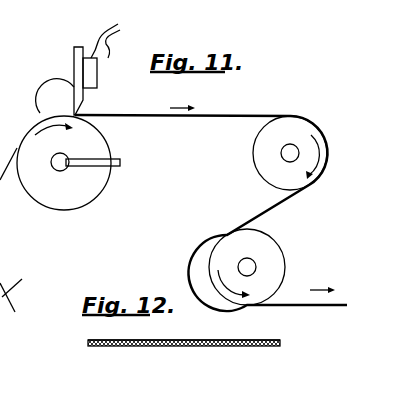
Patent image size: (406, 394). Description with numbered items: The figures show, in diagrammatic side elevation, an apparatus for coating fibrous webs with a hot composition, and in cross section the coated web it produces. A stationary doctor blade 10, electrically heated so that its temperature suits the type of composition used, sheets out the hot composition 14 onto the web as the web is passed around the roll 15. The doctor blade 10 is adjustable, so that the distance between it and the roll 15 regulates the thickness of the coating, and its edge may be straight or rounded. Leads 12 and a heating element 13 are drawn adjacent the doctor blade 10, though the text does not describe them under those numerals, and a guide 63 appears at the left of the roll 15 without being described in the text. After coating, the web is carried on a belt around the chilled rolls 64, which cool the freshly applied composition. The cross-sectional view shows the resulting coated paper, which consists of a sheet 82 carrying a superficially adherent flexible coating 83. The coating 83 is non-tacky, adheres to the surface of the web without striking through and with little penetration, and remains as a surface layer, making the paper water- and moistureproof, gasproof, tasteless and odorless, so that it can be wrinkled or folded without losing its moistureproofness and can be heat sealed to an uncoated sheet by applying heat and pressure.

In FIG. 11, the doctor blade 10 is at (75, 63).
In FIG. 11, the lead wires 12 is at (115, 38).
In FIG. 11, the heating element 13 is at (108, 58).
In FIG. 11, the hot composition 14 is at (52, 97).
In FIG. 11, the roll 15 is at (73, 197).
In FIG. 11, the guide 63 is at (15, 287).
In FIG. 11, the chilled roll 64 is at (303, 131).
In FIG. 12, the sheet 82 is at (122, 347).
In FIG. 12, the flexible coating 83 is at (243, 339).